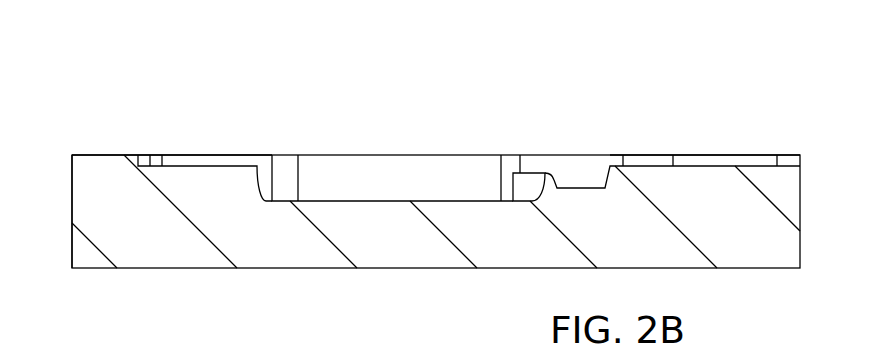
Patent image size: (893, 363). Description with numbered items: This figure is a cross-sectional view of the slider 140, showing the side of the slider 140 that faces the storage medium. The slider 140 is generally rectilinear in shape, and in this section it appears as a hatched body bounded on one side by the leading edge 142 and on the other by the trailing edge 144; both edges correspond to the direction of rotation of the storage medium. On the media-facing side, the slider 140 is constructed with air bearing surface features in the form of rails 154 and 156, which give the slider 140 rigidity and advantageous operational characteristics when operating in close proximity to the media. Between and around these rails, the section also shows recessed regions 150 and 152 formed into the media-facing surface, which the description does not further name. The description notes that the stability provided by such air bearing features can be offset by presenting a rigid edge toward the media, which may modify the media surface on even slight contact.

The slider 140 is at (228, 46).
The leading edge 142 is at (802, 180).
The trailing edge 144 is at (63, 168).
The central cavity 150 is at (378, 200).
The stepped recess 152 is at (582, 188).
The rail 154 is at (788, 155).
The rail 156 is at (92, 156).